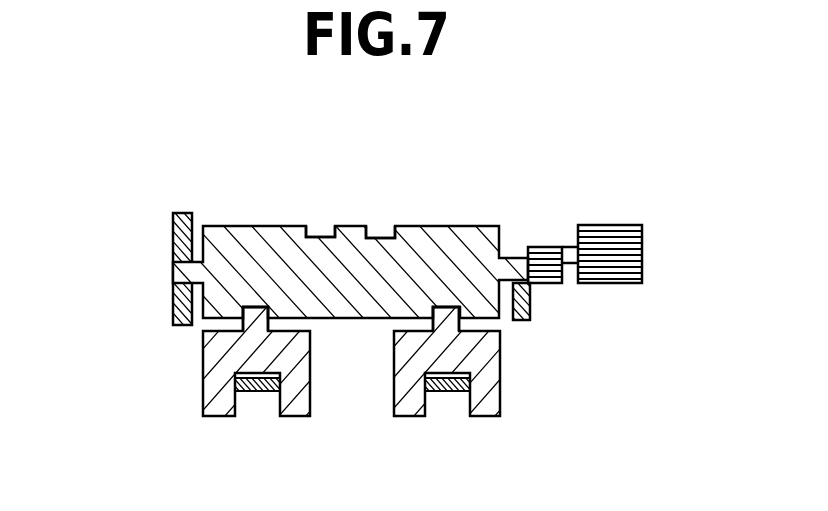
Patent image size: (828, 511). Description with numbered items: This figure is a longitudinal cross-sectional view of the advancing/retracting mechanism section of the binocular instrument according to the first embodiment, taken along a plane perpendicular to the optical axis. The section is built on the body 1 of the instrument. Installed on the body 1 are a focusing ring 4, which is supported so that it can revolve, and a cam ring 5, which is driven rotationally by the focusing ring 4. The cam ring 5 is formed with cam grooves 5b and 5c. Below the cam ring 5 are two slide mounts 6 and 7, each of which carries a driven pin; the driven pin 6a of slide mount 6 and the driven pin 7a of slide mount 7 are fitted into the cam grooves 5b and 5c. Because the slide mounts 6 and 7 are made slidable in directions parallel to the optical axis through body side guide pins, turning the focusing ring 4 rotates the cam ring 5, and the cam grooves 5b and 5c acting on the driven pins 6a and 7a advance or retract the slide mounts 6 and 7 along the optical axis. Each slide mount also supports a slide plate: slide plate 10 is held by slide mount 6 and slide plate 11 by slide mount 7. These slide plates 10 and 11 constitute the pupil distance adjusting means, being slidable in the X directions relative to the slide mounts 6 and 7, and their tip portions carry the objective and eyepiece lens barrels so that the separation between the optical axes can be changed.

The body 1 is at (172, 242).
The focusing ring 4 is at (620, 240).
The cam ring 5 is at (447, 250).
The cam groove 5b is at (378, 230).
The cam groove 5c is at (318, 230).
The slide mount 6 is at (210, 372).
The driven pin 6a is at (258, 318).
The slide mount 7 is at (492, 370).
The driven pin 7a is at (447, 318).
The slide plate 10 is at (262, 393).
The slide plate 11 is at (448, 393).